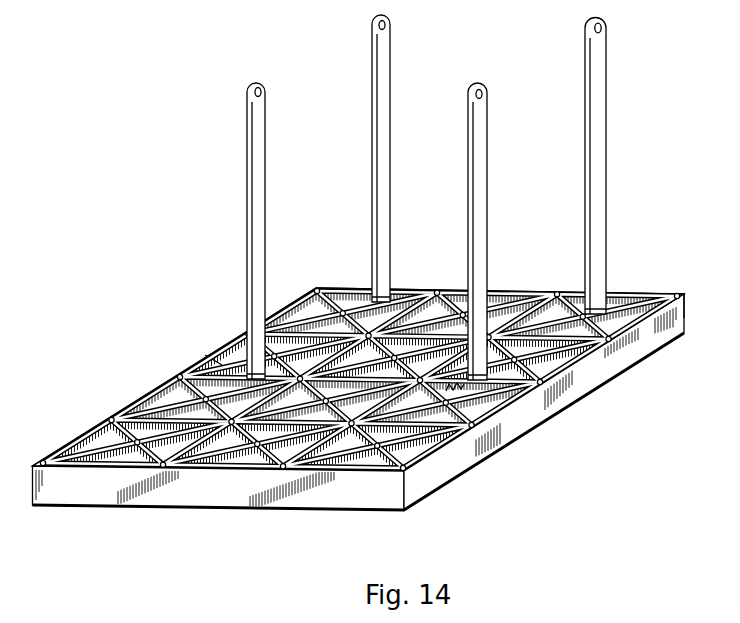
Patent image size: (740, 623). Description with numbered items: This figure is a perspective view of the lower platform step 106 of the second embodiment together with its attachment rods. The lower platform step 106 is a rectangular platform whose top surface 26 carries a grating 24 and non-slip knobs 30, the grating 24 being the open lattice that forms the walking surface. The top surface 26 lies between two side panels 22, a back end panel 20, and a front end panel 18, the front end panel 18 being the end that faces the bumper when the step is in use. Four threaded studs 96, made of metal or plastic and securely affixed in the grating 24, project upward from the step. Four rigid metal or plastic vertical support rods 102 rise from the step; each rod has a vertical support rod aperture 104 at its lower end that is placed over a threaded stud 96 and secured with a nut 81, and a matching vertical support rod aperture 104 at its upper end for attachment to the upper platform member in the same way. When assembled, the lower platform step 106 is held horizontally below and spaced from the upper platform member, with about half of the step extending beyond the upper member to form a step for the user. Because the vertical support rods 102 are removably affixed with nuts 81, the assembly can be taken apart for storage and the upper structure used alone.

The front end panel 18 is at (495, 290).
The back end panel 20 is at (253, 488).
The side panels 22 is at (101, 428).
The grating 24 is at (233, 450).
The top surface 26 is at (612, 310).
The non-slip knobs 30 is at (137, 427).
The nuts 81 is at (387, 299).
The threaded studs 96 is at (213, 360).
The vertical support rods 102 is at (263, 232).
The vertical support rod aperture 104 is at (262, 92).
The lower platform step 106 is at (535, 428).